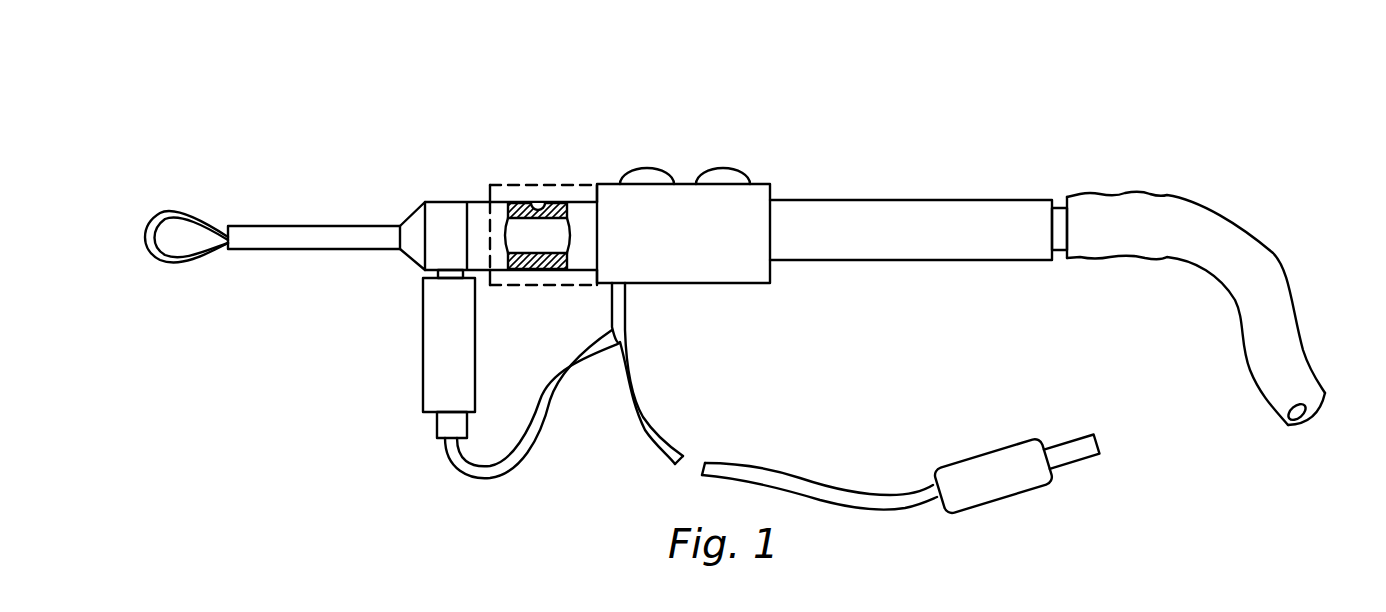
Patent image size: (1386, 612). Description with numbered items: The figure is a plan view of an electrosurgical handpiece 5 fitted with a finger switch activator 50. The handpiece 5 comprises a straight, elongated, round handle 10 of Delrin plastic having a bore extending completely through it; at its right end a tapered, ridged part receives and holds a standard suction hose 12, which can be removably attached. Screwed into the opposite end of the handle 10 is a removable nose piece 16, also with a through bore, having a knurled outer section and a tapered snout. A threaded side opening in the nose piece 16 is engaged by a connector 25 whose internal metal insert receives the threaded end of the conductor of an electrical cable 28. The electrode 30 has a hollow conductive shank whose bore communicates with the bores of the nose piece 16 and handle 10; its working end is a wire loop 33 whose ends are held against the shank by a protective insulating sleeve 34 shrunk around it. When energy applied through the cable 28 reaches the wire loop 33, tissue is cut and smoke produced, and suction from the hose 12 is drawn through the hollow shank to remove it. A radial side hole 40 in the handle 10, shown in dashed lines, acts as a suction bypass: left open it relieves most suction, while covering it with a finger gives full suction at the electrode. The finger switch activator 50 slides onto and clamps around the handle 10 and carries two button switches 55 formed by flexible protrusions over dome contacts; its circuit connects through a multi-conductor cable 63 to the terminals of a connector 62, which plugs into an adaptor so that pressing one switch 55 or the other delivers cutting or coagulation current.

The electrosurgical handpiece 5 is at (898, 137).
The handle 10 is at (973, 220).
The suction hose 12 is at (1247, 262).
The nose piece 16 is at (445, 212).
The connector 25 is at (418, 365).
The electrical cable 28 is at (537, 425).
The electrode 30 is at (352, 237).
The wire loop 33 is at (200, 214).
The insulating sleeve 34 is at (258, 225).
The side hole 40 is at (536, 204).
The finger switch activator 50 is at (733, 117).
The button switches 55 is at (648, 171).
The connector 62 is at (977, 463).
The multi-conductor electrical cable 63 is at (640, 418).